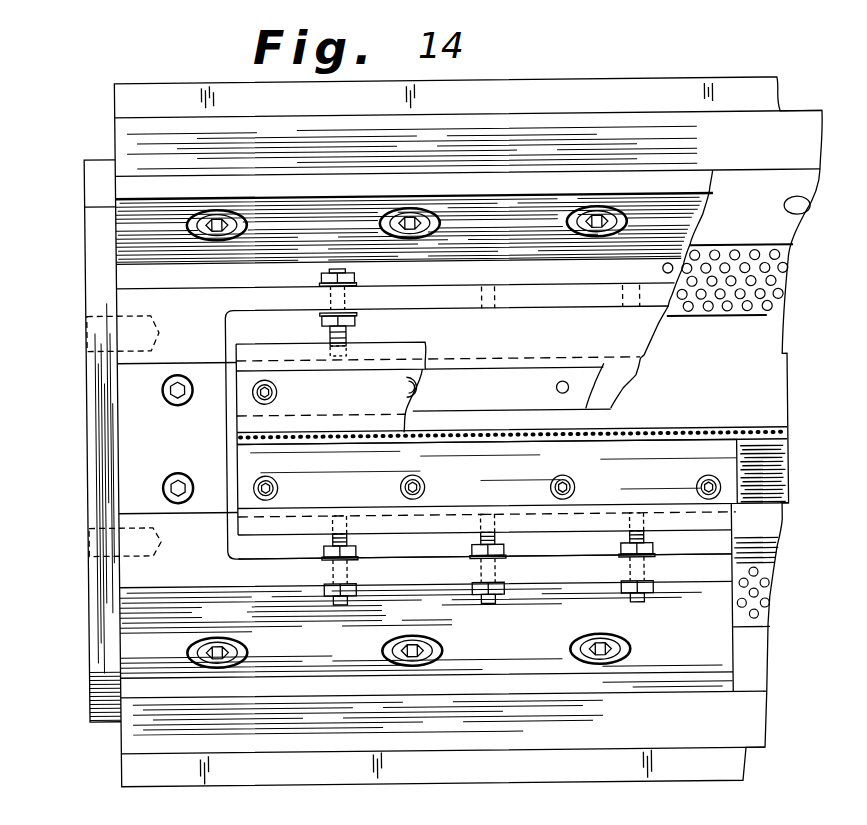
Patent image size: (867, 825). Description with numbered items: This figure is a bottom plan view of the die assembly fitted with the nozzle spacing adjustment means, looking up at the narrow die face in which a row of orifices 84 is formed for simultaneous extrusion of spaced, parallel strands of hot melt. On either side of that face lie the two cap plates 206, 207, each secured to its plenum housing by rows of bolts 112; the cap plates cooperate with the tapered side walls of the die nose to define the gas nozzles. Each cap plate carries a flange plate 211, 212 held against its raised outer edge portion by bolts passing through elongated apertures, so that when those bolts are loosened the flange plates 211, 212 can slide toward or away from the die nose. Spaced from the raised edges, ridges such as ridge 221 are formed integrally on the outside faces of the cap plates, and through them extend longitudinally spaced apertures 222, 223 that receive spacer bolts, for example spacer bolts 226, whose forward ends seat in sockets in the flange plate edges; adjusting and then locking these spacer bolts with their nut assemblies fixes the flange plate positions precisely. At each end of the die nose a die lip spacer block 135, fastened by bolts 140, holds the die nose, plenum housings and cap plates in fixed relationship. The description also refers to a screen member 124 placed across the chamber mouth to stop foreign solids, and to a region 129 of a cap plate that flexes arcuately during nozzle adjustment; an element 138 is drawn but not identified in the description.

The orifices 84 is at (513, 433).
The bolts 112 is at (599, 211).
The screen member 124 is at (323, 280).
The region of cap plate 129 is at (443, 303).
The die lip spacer block 135 is at (135, 447).
The bracket 138 is at (100, 627).
The bolts 140 is at (178, 403).
The cap plate 206 is at (262, 220).
The cap plate 207 is at (545, 646).
The flange plate 211 is at (404, 327).
The flange plate 212 is at (293, 522).
The ridge 221 is at (410, 573).
The apertures 222 is at (493, 297).
The apertures 223 is at (497, 567).
The spacer bolts 226 is at (356, 548).